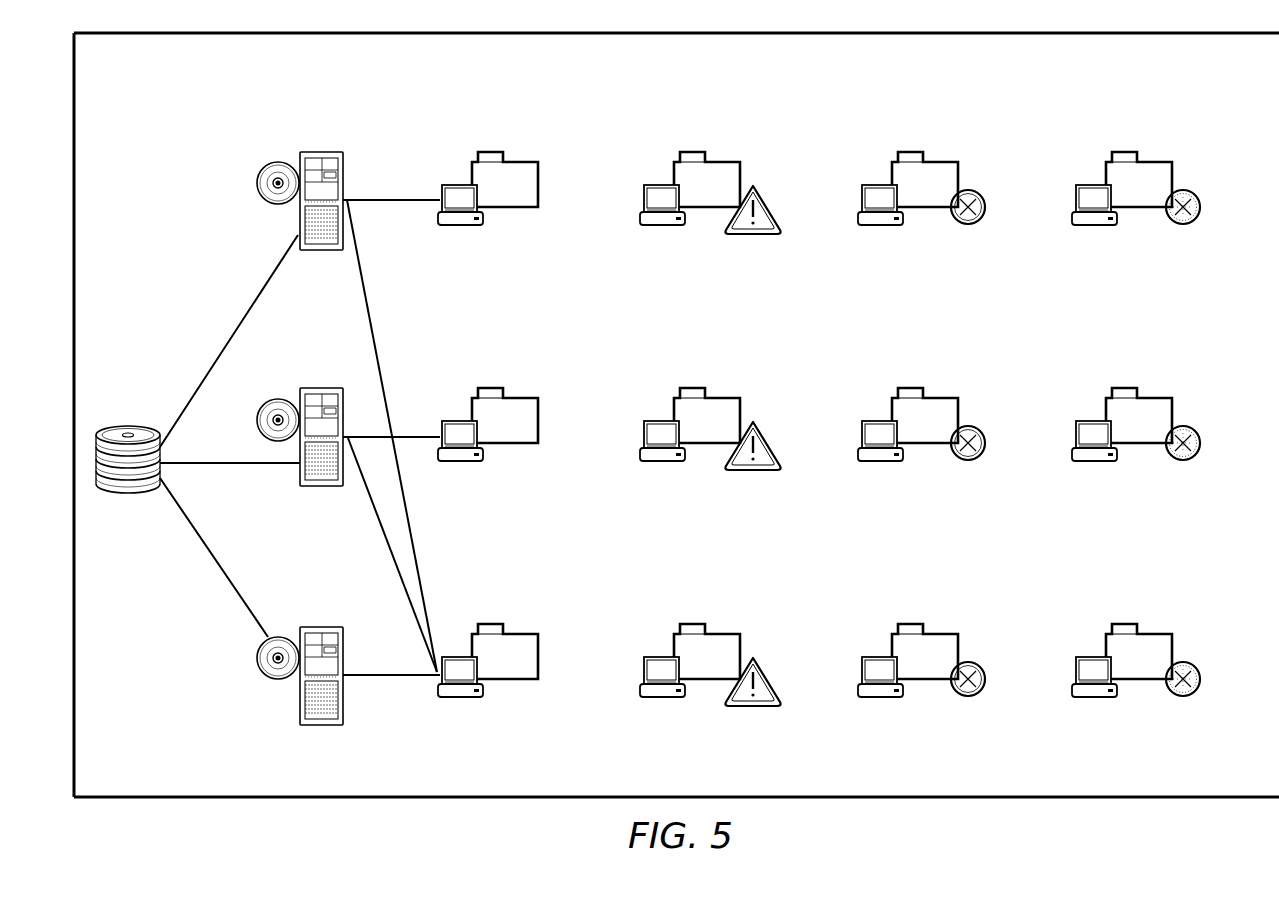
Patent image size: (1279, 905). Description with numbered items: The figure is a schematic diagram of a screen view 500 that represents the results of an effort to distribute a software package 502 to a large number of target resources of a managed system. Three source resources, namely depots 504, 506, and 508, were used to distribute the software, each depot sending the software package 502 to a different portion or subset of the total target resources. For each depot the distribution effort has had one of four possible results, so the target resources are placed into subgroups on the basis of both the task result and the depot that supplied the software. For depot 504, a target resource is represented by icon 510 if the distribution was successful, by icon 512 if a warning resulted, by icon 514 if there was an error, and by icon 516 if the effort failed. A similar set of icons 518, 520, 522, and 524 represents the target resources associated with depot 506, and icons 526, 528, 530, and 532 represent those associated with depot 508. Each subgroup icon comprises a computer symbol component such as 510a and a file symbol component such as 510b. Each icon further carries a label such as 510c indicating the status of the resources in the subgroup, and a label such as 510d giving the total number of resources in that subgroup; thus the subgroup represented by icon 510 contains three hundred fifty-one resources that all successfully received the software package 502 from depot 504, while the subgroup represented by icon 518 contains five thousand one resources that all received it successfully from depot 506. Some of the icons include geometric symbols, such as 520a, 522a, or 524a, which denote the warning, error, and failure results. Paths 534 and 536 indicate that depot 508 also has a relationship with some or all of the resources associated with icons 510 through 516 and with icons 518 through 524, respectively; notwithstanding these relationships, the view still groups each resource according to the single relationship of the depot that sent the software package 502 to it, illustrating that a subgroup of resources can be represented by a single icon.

The screen view 500 is at (187, 148).
The software package 502 is at (130, 426).
The depot 504 is at (318, 152).
The depot 506 is at (318, 388).
The depot 508 is at (318, 723).
The icon 510 is at (519, 183).
The computer symbol component 510a is at (452, 184).
The file symbol component 510b is at (521, 160).
The label 510c is at (540, 283).
The label 510d is at (480, 243).
The icon 512 is at (734, 145).
The icon 514 is at (949, 145).
The icon 516 is at (1164, 145).
The icon 518 is at (531, 382).
The icon 520 is at (740, 426).
The geometric symbol 520a is at (771, 437).
The icon 522 is at (955, 426).
The geometric symbol 522a is at (984, 434).
The icon 524 is at (1170, 426).
The geometric symbol 524a is at (1199, 434).
The icon 526 is at (531, 620).
The icon 528 is at (736, 620).
The icon 530 is at (951, 620).
The icon 532 is at (1166, 620).
The path 534 is at (380, 363).
The path 536 is at (392, 560).